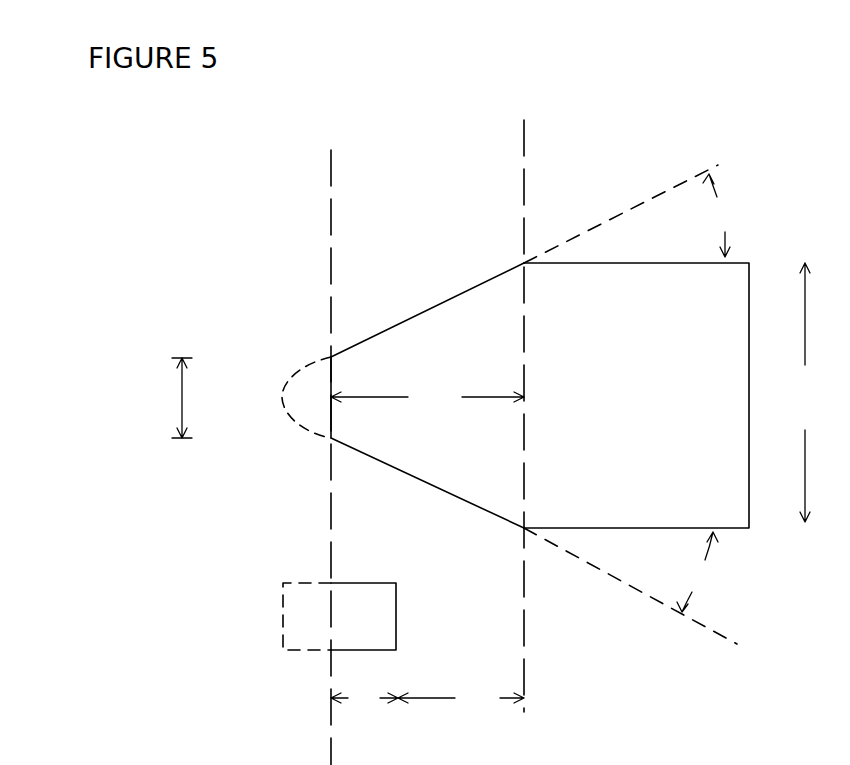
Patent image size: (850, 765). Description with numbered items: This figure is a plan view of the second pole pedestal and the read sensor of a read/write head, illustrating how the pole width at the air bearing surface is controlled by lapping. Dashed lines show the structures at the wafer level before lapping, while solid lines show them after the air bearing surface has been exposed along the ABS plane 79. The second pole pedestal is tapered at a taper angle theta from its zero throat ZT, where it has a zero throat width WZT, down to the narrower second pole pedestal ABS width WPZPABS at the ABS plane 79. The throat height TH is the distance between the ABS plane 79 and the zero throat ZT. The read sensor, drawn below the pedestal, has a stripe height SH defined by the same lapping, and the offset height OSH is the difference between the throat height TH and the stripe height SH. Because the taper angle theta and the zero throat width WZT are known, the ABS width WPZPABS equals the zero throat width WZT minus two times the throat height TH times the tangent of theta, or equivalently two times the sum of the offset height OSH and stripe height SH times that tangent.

The ABS plane 79 is at (333, 172).
The zero throat ZT is at (527, 136).
The taper angle theta is at (703, 393).
The zero throat width WZT is at (812, 392).
The second pole pedestal ABS width WPZPABS is at (128, 398).
The throat height TH is at (427, 398).
The stripe height SH is at (364, 699).
The offset height OSH is at (461, 699).